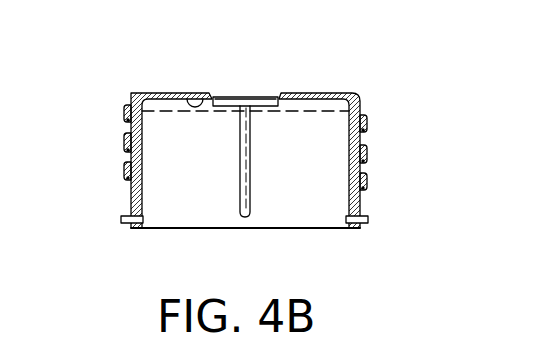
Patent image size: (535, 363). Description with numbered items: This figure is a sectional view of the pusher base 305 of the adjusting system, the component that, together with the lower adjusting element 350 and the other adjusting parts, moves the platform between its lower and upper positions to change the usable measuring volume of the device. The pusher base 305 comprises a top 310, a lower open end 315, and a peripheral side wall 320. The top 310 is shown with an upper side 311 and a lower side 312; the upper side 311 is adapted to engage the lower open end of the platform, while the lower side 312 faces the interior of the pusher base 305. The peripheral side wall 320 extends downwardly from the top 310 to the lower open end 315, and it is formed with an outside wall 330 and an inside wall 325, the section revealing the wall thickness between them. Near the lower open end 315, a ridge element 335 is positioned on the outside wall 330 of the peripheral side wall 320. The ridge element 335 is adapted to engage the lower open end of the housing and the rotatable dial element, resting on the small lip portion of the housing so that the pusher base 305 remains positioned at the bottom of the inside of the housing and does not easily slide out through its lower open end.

The pusher base 305 is at (317, 92).
The top 310 is at (154, 91).
The upper side 311 is at (172, 91).
The lower side 312 is at (209, 95).
The lower open end 315 is at (305, 229).
The peripheral side wall 320 is at (130, 185).
The inside wall 325 is at (362, 145).
The outside wall 330 is at (361, 197).
The ridge element 335 is at (121, 220).
The lower adjusting element 350 is at (129, 144).